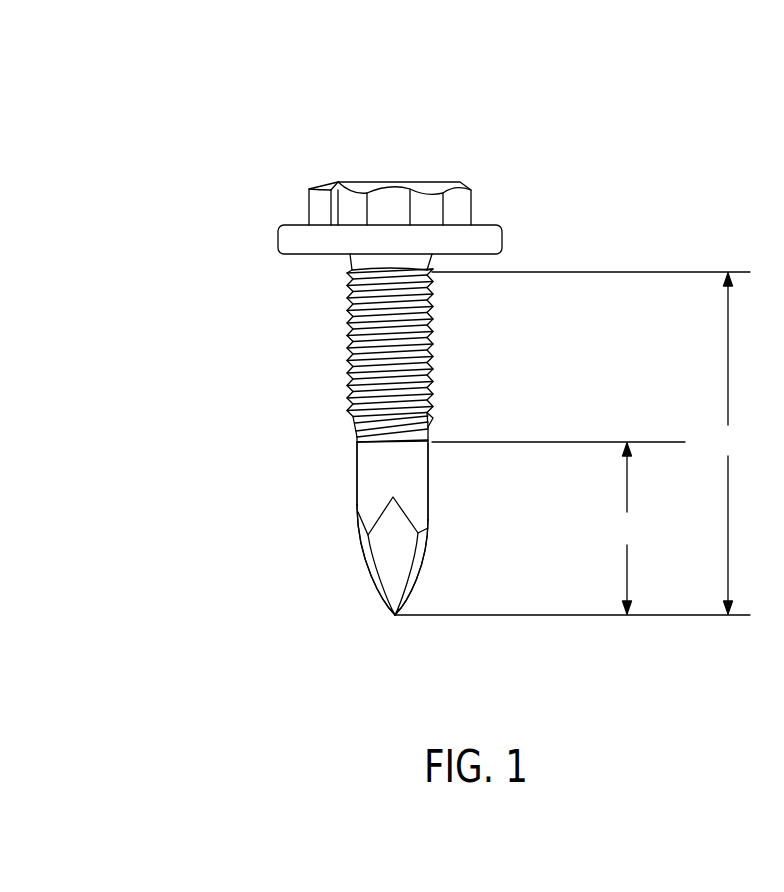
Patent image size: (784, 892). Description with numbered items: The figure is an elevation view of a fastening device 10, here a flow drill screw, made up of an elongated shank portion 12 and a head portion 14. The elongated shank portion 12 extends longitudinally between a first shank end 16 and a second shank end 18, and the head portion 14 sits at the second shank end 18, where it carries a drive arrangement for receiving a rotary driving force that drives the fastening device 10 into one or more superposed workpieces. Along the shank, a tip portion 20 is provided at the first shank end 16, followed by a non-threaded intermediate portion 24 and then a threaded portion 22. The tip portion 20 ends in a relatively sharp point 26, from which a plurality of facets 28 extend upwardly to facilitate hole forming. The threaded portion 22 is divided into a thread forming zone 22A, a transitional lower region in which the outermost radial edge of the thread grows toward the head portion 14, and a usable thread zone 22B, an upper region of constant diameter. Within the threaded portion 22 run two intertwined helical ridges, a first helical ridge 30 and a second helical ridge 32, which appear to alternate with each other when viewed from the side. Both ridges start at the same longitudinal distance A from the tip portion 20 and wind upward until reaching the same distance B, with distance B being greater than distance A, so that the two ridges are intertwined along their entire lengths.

The fastening device 10 is at (513, 173).
The elongated shank portion 12 is at (535, 405).
The head portion 14 is at (277, 202).
The first shank end 16 is at (375, 615).
The second shank end 18 is at (343, 262).
The tip portion 20 is at (353, 572).
The threaded portion 22 is at (273, 383).
The thread forming zone 22A is at (343, 428).
The usable thread zone 22B is at (332, 370).
The non-threaded intermediate portion 24 is at (342, 485).
The point 26 is at (395, 615).
The facets 28 is at (398, 556).
The first helical ridge 30 is at (433, 440).
The second helical ridge 32 is at (433, 425).
The distance A is at (627, 528).
The distance B is at (727, 443).